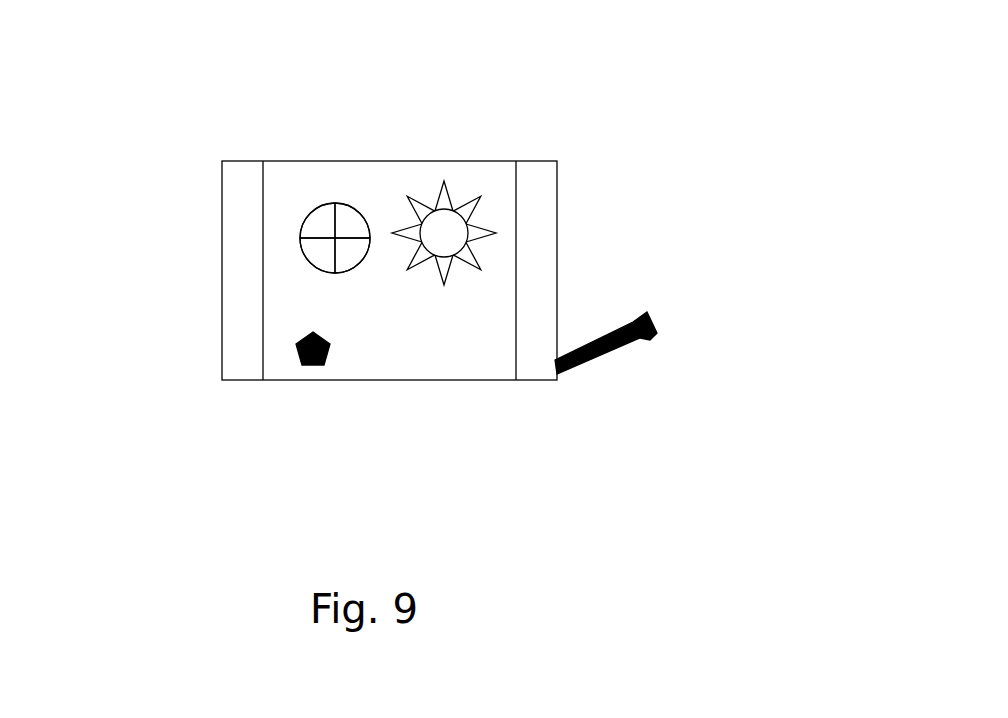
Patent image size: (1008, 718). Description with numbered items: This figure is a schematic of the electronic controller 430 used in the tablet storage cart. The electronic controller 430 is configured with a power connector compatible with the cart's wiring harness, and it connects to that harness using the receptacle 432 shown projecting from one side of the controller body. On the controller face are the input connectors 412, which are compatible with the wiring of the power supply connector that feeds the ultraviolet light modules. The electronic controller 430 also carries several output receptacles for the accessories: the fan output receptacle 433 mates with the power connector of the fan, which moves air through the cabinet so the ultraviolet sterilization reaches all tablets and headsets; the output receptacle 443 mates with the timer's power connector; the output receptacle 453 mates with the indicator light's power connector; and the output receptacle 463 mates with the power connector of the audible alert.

The electronic controller 430 is at (568, 194).
The receptacle 432 is at (668, 331).
The input connector 412 is at (298, 223).
The fan output receptacle 433 is at (298, 257).
The output receptacle 443 is at (358, 215).
The output receptacle 453 is at (358, 259).
The output receptacle 463 is at (297, 353).